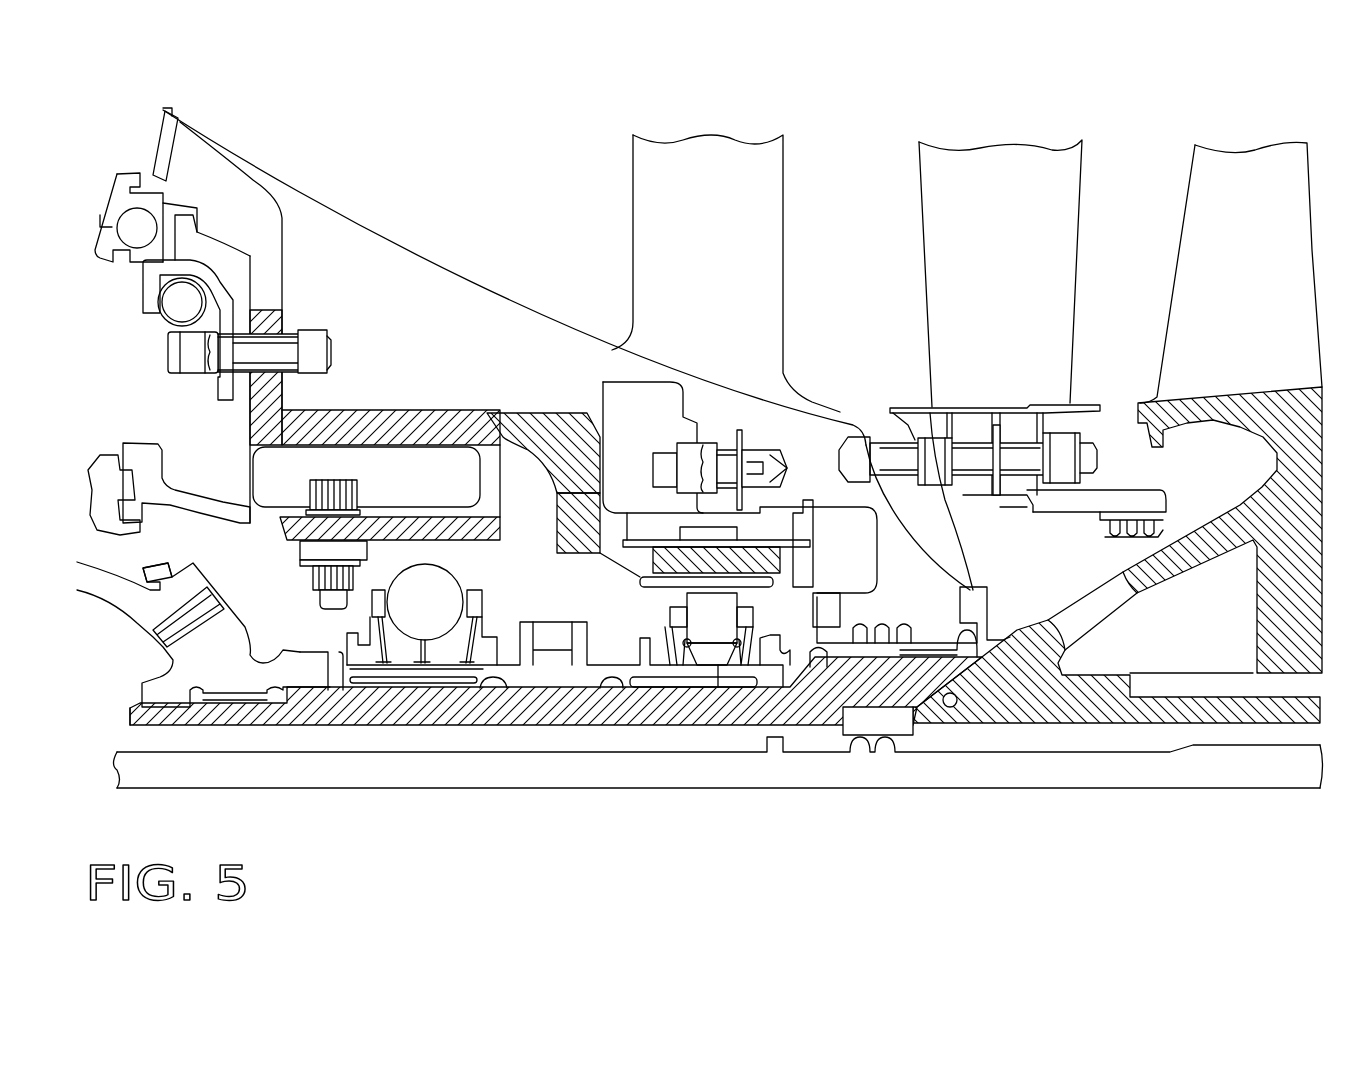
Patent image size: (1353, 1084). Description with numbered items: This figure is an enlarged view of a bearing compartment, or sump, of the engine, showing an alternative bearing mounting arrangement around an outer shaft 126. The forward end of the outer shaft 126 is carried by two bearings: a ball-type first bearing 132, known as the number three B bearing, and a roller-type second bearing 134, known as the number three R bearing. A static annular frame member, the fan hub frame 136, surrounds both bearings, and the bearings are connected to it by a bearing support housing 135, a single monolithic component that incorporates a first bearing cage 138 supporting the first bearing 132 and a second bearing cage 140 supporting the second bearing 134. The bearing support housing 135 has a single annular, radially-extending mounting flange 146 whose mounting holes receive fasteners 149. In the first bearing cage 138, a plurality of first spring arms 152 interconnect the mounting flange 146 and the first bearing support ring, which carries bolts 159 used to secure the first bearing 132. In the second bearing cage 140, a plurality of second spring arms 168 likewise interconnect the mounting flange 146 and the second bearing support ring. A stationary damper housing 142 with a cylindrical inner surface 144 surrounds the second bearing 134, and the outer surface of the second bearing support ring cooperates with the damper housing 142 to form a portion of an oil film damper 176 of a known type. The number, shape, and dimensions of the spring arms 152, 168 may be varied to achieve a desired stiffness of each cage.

The outer shaft 126 is at (297, 707).
The first bearing 132 is at (330, 621).
The second bearing 134 is at (662, 609).
The bearing support housing 135 is at (489, 396).
The fan hub frame 136 is at (303, 232).
The first bearing cage 138 is at (298, 460).
The second bearing cage 140 is at (549, 494).
The damper housing 142 is at (803, 533).
The cylindrical inner surface 144 is at (774, 537).
The mounting flange 146 is at (268, 320).
The fasteners 149 is at (329, 343).
The first spring arms 152 is at (387, 411).
The bolts 159 is at (345, 480).
The second spring arms 168 is at (572, 420).
The oil film damper 176 is at (621, 510).